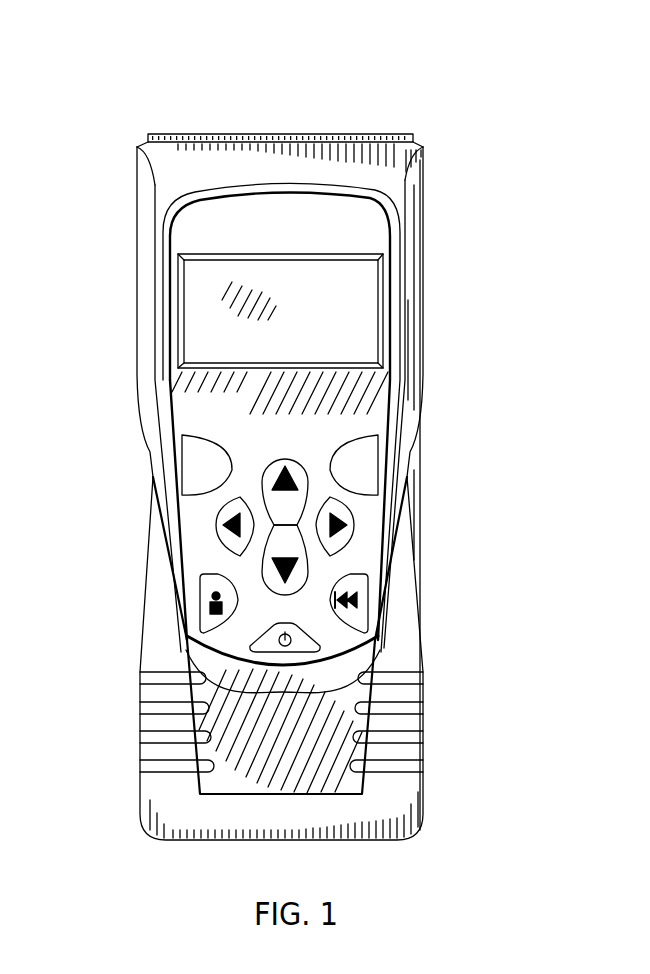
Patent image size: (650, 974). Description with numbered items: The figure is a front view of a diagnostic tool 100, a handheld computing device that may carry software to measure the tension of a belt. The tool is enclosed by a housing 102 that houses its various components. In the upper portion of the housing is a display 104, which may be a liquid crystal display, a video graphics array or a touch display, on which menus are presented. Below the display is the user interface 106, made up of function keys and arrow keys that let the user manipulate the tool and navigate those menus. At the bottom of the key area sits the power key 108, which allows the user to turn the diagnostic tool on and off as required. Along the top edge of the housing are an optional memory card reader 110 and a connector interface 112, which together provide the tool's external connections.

The diagnostic tool 100 is at (292, 37).
The housing 102 is at (160, 652).
The display 104 is at (200, 303).
The user interface 106 is at (235, 525).
The power key 108 is at (303, 643).
The memory card reader 110 is at (393, 134).
The connector interface 112 is at (168, 134).